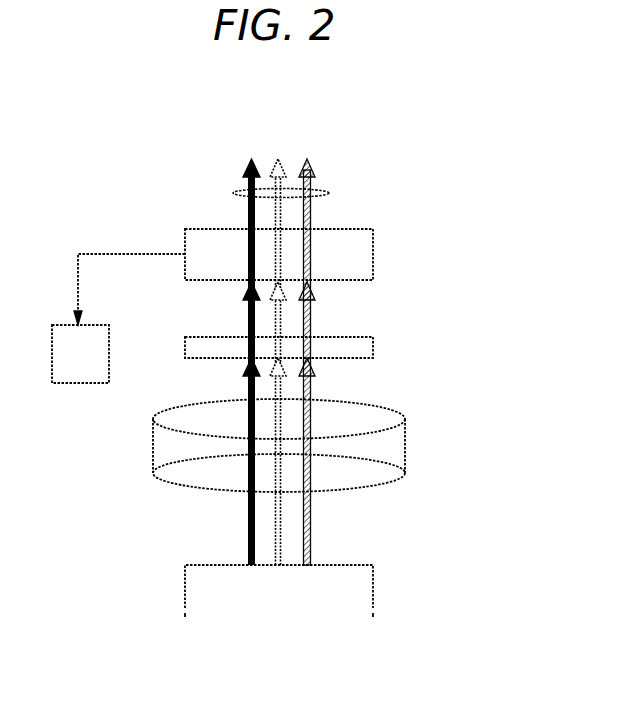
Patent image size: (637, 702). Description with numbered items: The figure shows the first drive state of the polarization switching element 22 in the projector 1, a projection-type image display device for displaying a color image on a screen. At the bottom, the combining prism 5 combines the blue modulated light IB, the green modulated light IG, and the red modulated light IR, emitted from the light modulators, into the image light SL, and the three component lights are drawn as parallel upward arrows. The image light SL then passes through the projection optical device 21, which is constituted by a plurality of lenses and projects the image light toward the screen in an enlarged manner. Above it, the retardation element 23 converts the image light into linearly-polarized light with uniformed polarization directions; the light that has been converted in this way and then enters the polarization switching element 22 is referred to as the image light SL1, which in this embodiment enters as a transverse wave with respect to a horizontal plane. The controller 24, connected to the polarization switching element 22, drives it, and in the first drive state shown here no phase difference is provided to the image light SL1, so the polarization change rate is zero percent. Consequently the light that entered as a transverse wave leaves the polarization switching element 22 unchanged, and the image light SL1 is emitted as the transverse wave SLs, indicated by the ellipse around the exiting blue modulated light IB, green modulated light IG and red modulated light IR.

The projector 1 is at (360, 148).
The combining prism 5 is at (368, 590).
The projection optical device 21 is at (378, 410).
The polarization switching element 22 is at (373, 240).
The retardation element 23 is at (373, 348).
The controller 24 is at (109, 345).
The blue modulated light IB is at (255, 303).
The green modulated light IG is at (283, 314).
The red modulated light IR is at (311, 327).
The image light SL is at (452, 486).
The image light (linearly-polarized) SL1 is at (420, 273).
The transverse wave SLs is at (329, 192).